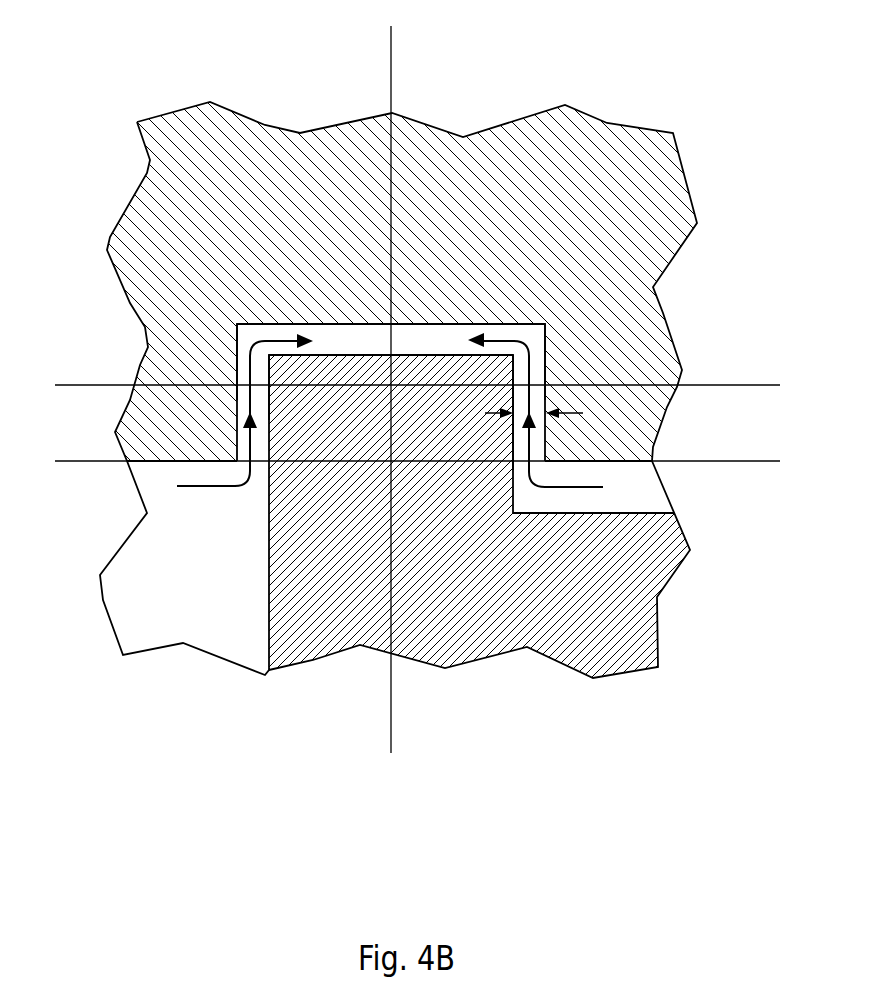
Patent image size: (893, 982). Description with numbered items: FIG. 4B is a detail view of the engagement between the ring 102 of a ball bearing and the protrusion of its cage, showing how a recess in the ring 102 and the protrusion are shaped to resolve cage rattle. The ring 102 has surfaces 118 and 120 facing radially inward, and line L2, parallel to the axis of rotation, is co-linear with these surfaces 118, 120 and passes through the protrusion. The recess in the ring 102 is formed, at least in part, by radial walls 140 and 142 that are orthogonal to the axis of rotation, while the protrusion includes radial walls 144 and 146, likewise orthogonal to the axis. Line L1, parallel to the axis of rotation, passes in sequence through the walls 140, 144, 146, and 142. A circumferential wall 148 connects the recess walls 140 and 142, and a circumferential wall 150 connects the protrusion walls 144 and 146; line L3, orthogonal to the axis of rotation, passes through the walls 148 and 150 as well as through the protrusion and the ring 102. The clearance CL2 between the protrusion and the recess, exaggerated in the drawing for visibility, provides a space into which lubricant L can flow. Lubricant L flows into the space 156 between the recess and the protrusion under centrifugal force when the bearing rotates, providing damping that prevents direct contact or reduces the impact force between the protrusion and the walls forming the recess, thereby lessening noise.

The ring 102 is at (605, 119).
The surface 118 is at (160, 462).
The surface 120 is at (607, 462).
The radial wall 140 is at (240, 329).
The radial wall 142 is at (546, 362).
The radial wall 144 is at (268, 362).
The radial wall 146 is at (513, 435).
The circumferential wall 148 is at (377, 324).
The circumferential wall 150 is at (313, 337).
The space 156 is at (417, 335).
The line L1 is at (75, 386).
The line L2 is at (75, 462).
The line L3 is at (390, 71).
The clearance CL2 is at (568, 412).
The lubricant L is at (213, 488).